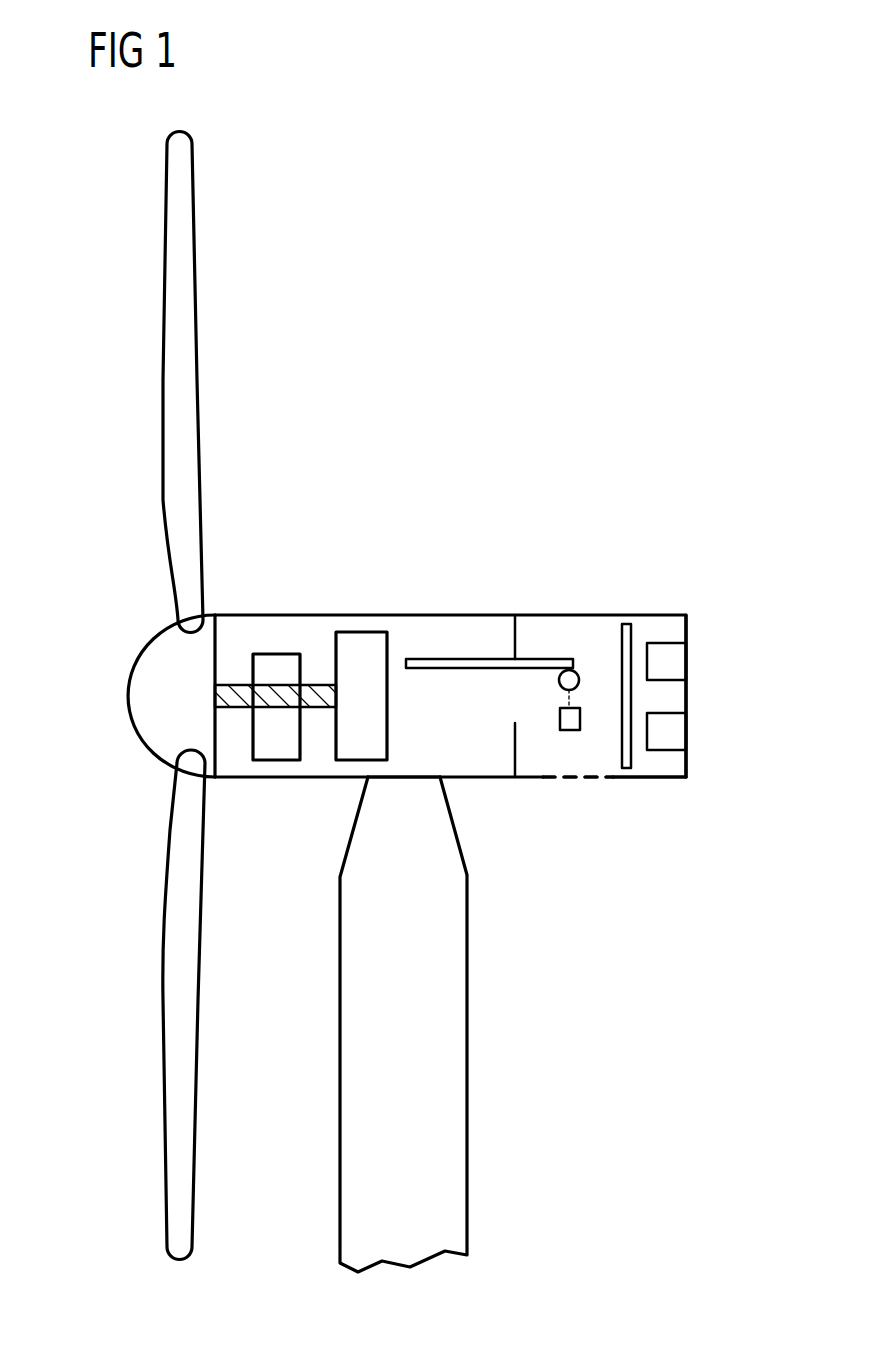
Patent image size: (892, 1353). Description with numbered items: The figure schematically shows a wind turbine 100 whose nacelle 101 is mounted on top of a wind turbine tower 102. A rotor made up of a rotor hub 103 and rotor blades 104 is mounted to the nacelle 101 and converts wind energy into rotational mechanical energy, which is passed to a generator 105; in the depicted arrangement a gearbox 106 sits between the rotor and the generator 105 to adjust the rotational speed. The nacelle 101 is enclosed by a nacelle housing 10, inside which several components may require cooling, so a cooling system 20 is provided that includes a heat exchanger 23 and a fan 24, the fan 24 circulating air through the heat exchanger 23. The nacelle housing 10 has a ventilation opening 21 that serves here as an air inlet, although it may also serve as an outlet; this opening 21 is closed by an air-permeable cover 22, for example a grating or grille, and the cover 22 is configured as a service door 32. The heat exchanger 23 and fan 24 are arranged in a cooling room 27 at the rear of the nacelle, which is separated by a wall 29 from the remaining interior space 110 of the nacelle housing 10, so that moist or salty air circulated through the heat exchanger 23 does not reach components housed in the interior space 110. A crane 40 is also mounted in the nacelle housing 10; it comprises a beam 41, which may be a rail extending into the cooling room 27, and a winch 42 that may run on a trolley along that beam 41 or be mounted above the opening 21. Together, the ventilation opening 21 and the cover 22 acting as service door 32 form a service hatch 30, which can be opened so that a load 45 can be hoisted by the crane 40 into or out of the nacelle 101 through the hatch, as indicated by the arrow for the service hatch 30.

The wind turbine 100 is at (468, 370).
The nacelle 101 is at (588, 538).
The wind turbine tower 102 is at (468, 1065).
The rotor hub 103 is at (151, 653).
The rotor blades 104 is at (172, 440).
The generator 105 is at (358, 632).
The gearbox 106 is at (276, 654).
The interior space 110 is at (425, 722).
The nacelle housing 10 is at (640, 615).
The cooling system 20 is at (676, 767).
The ventilation opening 21 is at (600, 798).
The cover 22 is at (568, 780).
The service door 32 is at (563, 840).
The heat exchanger 23 is at (620, 627).
The fan 24 is at (676, 657).
The cooling room 27 is at (655, 877).
The wall 29 is at (515, 741).
The service hatch 30 is at (548, 756).
The crane 40 is at (542, 659).
The beam 41 is at (448, 661).
The winch 42 is at (592, 668).
The load 45 is at (581, 718).